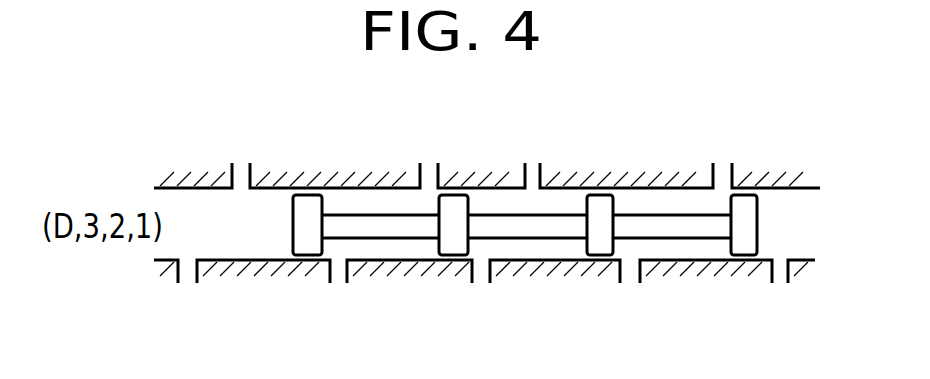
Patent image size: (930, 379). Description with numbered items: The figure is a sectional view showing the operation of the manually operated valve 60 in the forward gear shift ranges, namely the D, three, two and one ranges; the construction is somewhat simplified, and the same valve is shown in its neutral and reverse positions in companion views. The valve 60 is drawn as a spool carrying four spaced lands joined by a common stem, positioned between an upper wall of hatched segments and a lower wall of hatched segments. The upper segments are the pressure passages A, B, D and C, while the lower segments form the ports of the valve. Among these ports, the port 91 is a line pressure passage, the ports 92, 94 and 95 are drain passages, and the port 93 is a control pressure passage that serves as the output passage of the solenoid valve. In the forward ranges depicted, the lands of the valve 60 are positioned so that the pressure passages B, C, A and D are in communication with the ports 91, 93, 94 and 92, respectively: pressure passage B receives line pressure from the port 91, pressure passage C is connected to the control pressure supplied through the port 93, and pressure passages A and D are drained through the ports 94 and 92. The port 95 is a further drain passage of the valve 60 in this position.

The pressure passage A is at (241, 172).
The pressure passage B is at (432, 171).
The pressure passage C is at (725, 174).
The pressure passage D is at (534, 165).
The manually operated valve 60 is at (755, 232).
The port 91 is at (338, 284).
The port 92 is at (480, 284).
The port 93 is at (628, 284).
The port 94 is at (182, 283).
The port 95 is at (780, 284).